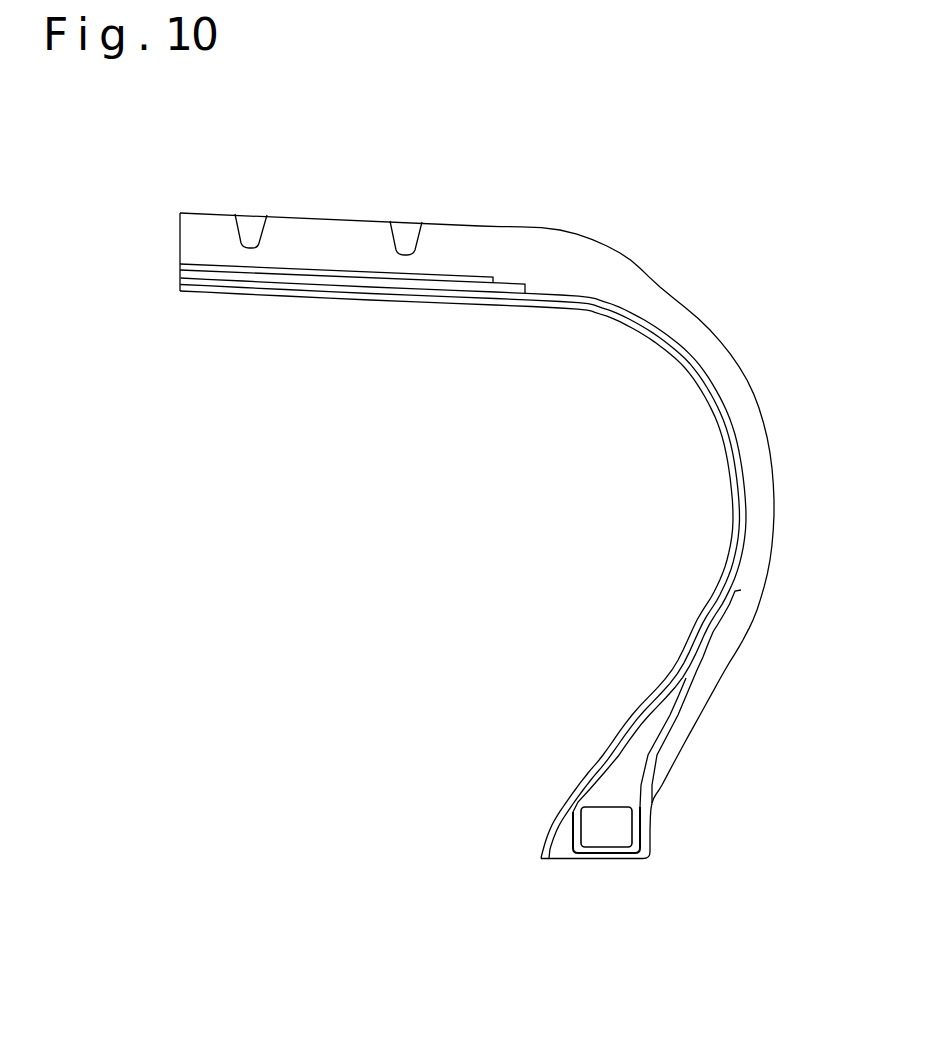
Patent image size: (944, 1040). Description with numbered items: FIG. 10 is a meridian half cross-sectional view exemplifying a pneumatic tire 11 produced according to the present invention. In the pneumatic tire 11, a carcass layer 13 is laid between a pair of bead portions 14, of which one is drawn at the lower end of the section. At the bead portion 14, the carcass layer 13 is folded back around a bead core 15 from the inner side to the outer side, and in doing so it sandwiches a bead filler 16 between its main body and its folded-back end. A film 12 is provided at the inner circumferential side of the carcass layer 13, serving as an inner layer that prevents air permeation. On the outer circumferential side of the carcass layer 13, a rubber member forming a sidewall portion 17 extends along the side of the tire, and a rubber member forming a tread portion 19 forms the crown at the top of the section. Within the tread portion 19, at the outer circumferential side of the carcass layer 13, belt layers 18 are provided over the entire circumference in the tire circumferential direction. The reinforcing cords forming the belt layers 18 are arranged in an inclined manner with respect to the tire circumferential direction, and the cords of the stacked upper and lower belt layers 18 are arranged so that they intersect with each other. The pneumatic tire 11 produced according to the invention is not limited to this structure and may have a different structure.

The pneumatic tire 11 is at (653, 243).
The film 12 is at (632, 332).
The carcass layer 13 is at (572, 298).
The bead portion 14 is at (653, 825).
The bead core 15 is at (598, 823).
The bead filler 16 is at (618, 777).
The sidewall portion 17 is at (772, 500).
The belt layers 18 is at (423, 273).
The tread portion 19 is at (305, 235).